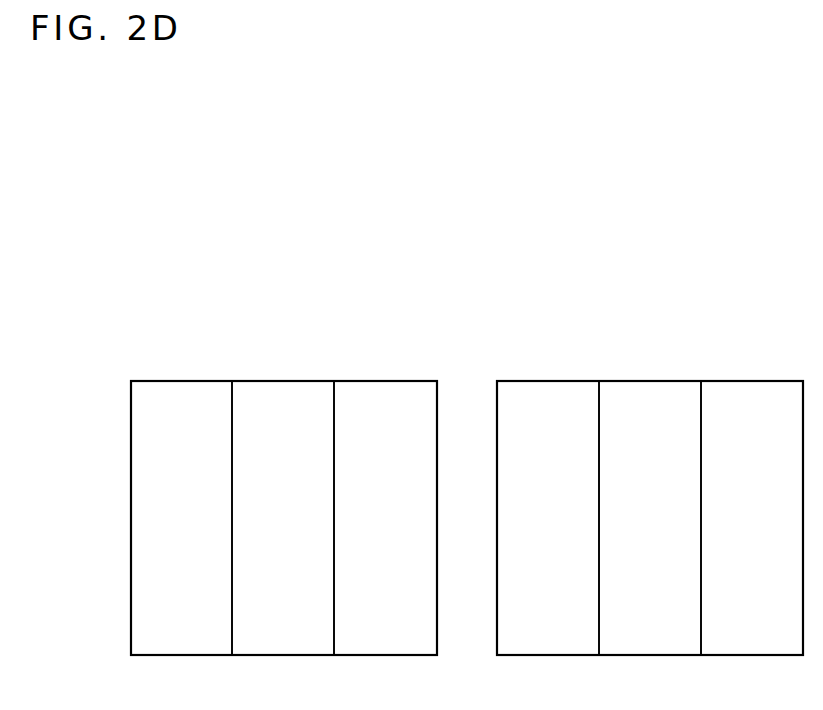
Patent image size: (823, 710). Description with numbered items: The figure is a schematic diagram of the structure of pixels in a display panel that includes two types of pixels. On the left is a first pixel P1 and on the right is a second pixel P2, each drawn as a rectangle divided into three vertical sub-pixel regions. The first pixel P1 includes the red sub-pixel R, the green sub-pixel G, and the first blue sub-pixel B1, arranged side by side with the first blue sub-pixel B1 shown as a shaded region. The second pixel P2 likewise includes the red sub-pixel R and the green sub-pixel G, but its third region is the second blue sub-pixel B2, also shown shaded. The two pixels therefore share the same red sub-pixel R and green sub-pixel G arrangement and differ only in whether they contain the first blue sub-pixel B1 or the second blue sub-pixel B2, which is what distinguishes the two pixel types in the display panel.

The first pixel P1 is at (286, 379).
The second pixel P2 is at (652, 379).
The red sub-pixel R is at (365, 518).
The green sub-pixel G is at (466, 518).
The first blue sub-pixel B1 is at (385, 518).
The second blue sub-pixel B2 is at (752, 518).